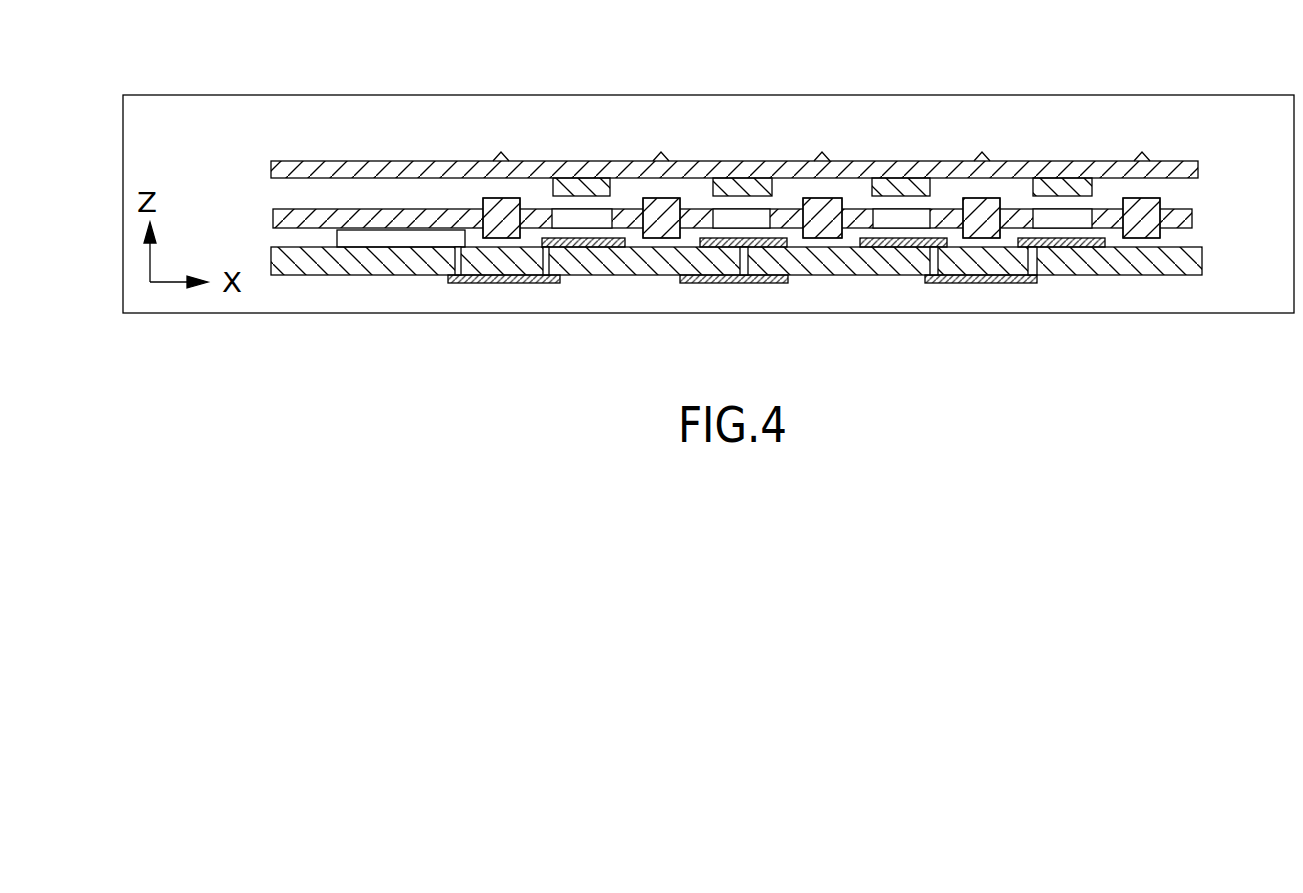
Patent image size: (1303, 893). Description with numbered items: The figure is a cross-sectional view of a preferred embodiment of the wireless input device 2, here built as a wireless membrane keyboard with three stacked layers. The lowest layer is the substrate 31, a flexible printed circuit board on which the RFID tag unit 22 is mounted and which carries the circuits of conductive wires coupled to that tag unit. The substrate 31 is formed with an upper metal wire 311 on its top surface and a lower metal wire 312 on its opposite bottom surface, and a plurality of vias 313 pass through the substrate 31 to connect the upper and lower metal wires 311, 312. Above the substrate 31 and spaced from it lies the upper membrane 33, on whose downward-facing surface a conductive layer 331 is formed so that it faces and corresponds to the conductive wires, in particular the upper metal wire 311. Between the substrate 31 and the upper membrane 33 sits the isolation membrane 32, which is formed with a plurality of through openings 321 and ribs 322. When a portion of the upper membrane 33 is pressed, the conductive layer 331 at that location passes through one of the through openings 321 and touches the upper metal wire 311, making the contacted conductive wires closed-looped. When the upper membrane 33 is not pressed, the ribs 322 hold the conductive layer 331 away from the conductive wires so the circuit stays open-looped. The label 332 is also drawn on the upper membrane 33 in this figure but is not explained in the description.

The wireless input device 2 is at (123, 313).
The RFID tag unit 22 is at (337, 241).
The substrate 31 is at (769, 308).
The upper metal wire 311 is at (582, 248).
The lower metal wire 312 is at (484, 284).
The via 313 is at (454, 264).
The isolation membrane 32 is at (774, 147).
The through opening 321 is at (887, 217).
The rib 322 is at (1152, 206).
The upper membrane 33 is at (769, 114).
The conductive layer 331 is at (549, 181).
The dielectric plate of third layer 332 is at (568, 161).